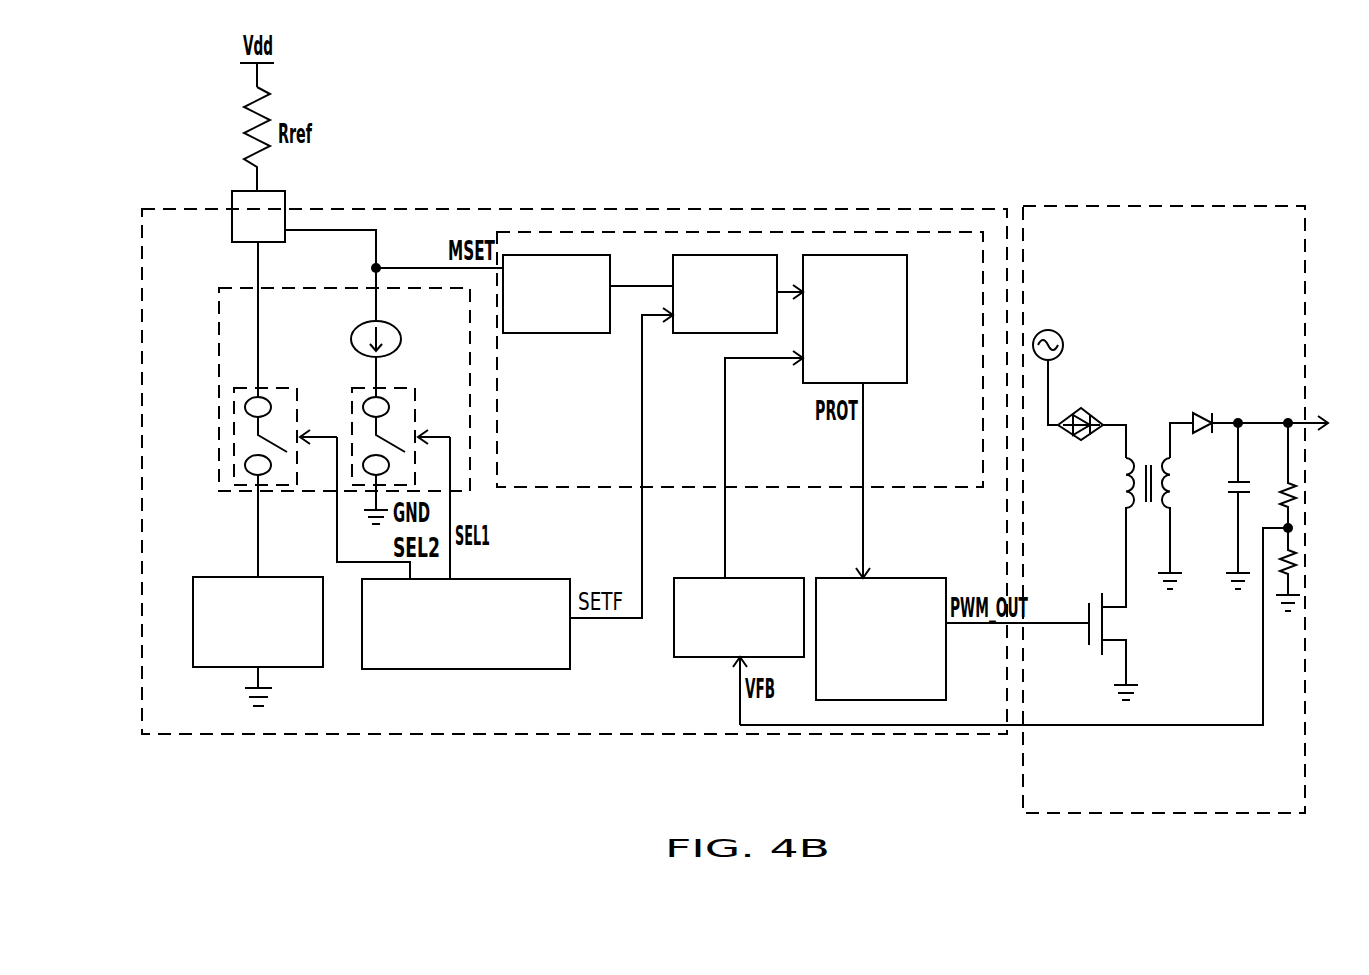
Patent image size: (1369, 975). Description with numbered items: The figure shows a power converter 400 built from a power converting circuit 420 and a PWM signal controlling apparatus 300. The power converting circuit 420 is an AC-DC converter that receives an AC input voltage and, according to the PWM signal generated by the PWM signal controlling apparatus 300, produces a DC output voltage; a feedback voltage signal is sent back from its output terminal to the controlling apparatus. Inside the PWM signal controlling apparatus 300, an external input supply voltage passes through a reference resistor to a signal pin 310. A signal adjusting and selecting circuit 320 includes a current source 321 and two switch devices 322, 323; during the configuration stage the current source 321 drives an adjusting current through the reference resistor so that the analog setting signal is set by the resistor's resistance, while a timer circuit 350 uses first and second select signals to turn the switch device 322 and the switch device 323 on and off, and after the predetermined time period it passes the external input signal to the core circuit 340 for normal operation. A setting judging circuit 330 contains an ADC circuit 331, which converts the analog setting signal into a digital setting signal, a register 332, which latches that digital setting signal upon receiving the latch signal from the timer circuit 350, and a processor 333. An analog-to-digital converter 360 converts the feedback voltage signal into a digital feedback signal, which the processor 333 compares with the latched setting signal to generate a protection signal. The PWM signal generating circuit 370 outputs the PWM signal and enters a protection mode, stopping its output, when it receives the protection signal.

The PWM signal controlling apparatus 300 is at (600, 735).
The signal pin 310 is at (285, 205).
The signal adjusting and selecting circuit 320 is at (219, 420).
The current source 321 is at (396, 332).
The switch device 322 is at (265, 388).
The switch device 323 is at (403, 388).
The setting judging circuit 330 is at (675, 488).
The ADC circuit 331 is at (523, 333).
The register 332 is at (685, 333).
The processor 333 is at (907, 318).
The core circuit 340 is at (278, 577).
The timer circuit 350 is at (527, 579).
The analog-to-digital converter (ADC) 360 is at (752, 578).
The PWM signal generating circuit 370 is at (903, 578).
The power converter 400 is at (1367, 99).
The power converting circuit 420 is at (1305, 318).